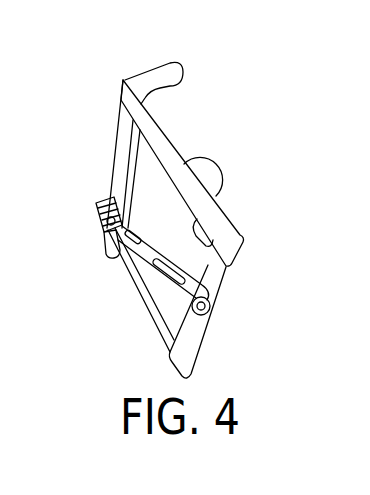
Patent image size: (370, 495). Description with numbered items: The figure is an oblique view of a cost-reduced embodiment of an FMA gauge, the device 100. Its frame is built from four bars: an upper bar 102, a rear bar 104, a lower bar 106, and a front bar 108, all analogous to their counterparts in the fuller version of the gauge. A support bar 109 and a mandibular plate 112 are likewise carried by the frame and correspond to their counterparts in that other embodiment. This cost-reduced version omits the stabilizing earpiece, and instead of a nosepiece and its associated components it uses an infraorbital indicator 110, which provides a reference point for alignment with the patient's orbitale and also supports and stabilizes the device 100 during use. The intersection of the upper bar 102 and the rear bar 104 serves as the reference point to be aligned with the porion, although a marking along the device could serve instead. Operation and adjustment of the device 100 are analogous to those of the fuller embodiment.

The device 100 is at (91, 63).
The upper bar 102 is at (172, 142).
The rear bar 104 is at (218, 298).
The lower bar 106 is at (195, 297).
The front bar 108 is at (113, 160).
The support bar 109 is at (131, 279).
The infraorbital indicator 110 is at (137, 74).
The mandibular plate 112 is at (215, 160).